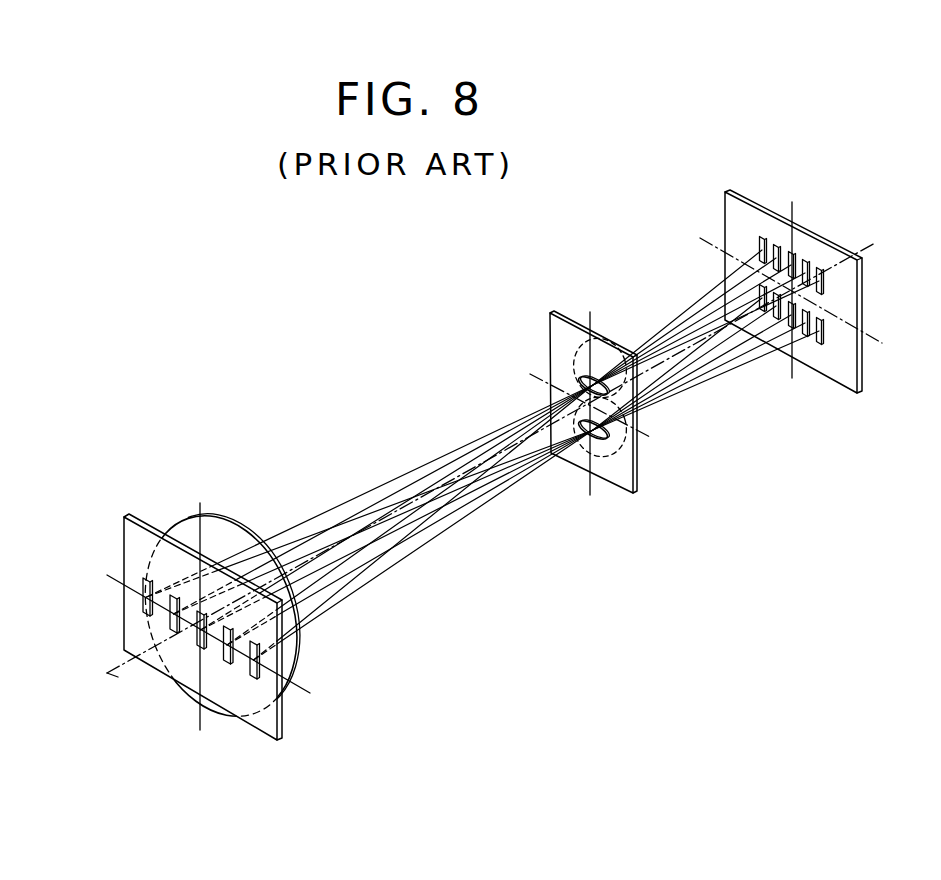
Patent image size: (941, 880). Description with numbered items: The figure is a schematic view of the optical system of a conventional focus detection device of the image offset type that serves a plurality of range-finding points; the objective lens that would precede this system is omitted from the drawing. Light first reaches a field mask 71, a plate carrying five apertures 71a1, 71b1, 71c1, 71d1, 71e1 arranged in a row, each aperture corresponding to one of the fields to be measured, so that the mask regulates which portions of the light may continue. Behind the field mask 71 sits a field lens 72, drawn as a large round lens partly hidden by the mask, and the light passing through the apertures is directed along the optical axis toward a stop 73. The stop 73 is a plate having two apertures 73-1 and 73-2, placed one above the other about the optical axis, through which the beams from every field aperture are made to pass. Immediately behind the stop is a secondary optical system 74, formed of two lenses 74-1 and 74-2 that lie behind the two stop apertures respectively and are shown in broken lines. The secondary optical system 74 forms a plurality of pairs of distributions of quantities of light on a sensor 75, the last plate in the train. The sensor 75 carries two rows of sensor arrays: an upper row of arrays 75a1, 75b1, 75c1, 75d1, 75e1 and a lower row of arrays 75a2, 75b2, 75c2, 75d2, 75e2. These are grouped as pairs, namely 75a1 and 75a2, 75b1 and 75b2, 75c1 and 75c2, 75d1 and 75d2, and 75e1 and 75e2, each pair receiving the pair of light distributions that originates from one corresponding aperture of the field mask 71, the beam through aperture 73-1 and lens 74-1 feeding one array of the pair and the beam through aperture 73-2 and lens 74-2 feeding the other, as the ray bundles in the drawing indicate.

The field mask 71 is at (130, 517).
The aperture 71a1 is at (147, 616).
The aperture 71b1 is at (174, 634).
The aperture 71c1 is at (200, 649).
The aperture 71d1 is at (227, 664).
The aperture 71e1 is at (254, 679).
The field lens 72 is at (213, 520).
The stop 73 is at (550, 317).
The aperture 73-1 is at (580, 380).
The aperture 73-2 is at (588, 443).
The secondary optical system 74 is at (667, 208).
The lens 74-1 is at (607, 340).
The lens 74-2 is at (612, 457).
The sensor 75 is at (724, 195).
The sensor array 75a1 is at (762, 236).
The sensor array 75b1 is at (776, 244).
The sensor array 75c1 is at (791, 251).
The sensor array 75d1 is at (805, 259).
The sensor array 75e1 is at (819, 267).
The sensor array 75a2 is at (762, 312).
The sensor array 75b2 is at (776, 320).
The sensor array 75c2 is at (791, 329).
The sensor array 75d2 is at (805, 337).
The sensor array 75e2 is at (819, 345).